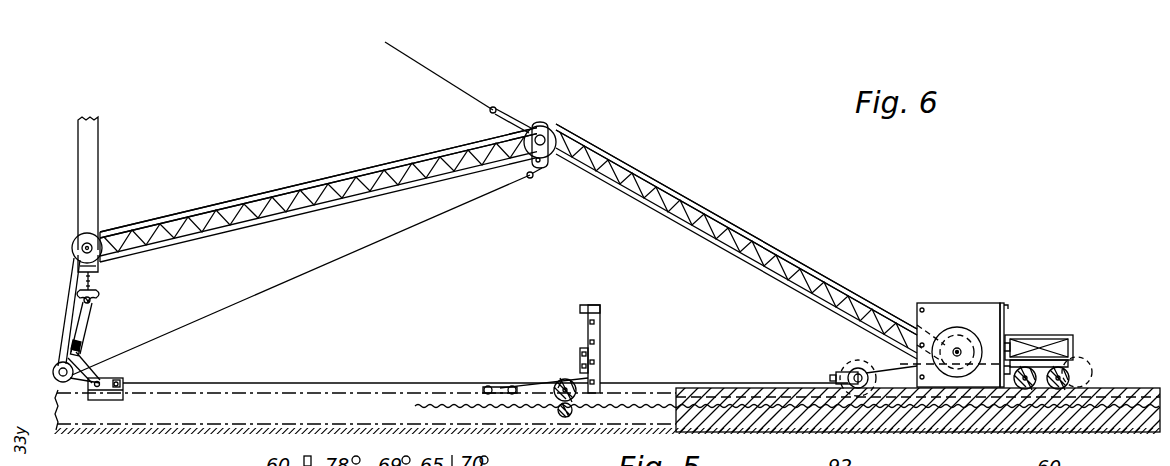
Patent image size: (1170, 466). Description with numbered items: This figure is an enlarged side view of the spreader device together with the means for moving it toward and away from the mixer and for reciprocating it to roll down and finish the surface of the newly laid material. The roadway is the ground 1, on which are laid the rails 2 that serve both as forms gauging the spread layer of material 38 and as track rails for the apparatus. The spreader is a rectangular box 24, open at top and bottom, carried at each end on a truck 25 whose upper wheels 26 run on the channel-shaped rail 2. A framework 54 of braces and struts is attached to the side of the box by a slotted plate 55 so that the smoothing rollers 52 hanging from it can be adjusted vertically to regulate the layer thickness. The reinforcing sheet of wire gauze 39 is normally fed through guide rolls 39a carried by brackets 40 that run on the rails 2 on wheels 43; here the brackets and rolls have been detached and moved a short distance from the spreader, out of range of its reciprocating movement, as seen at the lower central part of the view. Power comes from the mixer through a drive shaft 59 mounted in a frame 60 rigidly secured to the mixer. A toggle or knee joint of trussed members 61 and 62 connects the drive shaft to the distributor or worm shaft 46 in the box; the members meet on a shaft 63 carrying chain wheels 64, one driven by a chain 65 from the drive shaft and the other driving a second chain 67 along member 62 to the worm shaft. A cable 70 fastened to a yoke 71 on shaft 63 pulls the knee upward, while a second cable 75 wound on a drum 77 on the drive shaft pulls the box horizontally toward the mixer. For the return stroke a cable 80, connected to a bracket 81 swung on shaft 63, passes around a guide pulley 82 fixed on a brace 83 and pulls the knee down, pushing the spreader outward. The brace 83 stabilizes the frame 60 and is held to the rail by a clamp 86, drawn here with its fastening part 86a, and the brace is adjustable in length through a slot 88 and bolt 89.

The ground 1 is at (197, 428).
The rails 2 is at (198, 399).
The spreader box 24 is at (983, 303).
The truck 25 is at (890, 370).
The upper wheels 26 is at (853, 362).
The layer of material 38 is at (1128, 396).
The sheet of wire gauze 39 is at (430, 406).
The guide rolls 39a is at (563, 380).
The brackets 40 is at (533, 378).
The wheels 43 is at (510, 386).
The distributor shaft 46 is at (960, 352).
The rollers 52 is at (1074, 366).
The framework 54 is at (1062, 336).
The plate 55 is at (1004, 335).
The drive shaft 59 is at (71, 243).
The frame 60 is at (84, 158).
The trussed member 61 is at (274, 198).
The trussed member 62 is at (822, 273).
The shaft 63 is at (556, 137).
The chain wheels 64 is at (541, 126).
The chain 65 is at (351, 172).
The second drive chain 67 is at (720, 211).
The cable 70 is at (449, 84).
The yoke 71 is at (491, 113).
The cable 75 is at (347, 382).
The drum 77 is at (76, 255).
The cable 80 is at (62, 306).
The yoke or bracket 81 is at (547, 172).
The guide pulley 82 is at (54, 373).
The brace 83 is at (87, 327).
The clamp 86 is at (112, 400).
The bolt 86a is at (124, 381).
The slot 88 is at (81, 344).
The bolt 89 is at (80, 350).